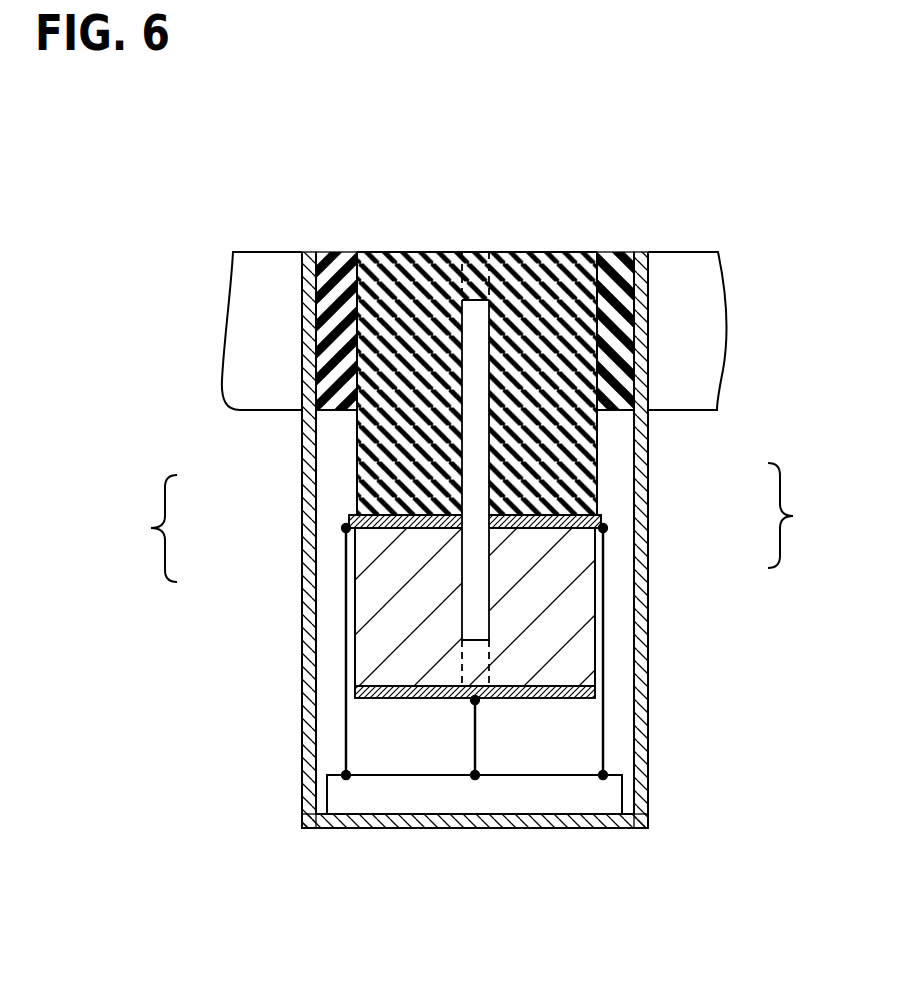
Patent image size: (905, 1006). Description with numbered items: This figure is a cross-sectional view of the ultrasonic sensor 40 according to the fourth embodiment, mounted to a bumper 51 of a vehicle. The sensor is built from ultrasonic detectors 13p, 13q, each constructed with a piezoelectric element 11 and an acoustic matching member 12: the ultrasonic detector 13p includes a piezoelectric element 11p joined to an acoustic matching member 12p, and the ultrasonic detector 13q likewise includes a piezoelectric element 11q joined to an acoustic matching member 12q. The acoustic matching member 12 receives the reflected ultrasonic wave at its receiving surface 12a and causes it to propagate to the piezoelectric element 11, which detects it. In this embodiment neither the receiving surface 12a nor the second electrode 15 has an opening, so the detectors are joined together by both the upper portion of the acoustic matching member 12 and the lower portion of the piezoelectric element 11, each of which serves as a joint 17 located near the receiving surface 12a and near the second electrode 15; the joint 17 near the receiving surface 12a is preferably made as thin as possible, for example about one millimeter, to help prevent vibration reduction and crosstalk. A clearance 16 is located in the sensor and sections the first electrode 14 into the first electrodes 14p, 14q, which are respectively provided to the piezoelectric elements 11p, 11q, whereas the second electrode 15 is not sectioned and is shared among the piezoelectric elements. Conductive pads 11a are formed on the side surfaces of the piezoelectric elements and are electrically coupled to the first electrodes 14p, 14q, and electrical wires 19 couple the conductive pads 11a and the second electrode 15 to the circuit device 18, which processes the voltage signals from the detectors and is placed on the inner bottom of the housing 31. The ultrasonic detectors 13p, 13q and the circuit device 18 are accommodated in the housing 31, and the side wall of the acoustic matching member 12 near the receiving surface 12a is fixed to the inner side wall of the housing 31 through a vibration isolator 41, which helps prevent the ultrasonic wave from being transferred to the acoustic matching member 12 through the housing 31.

The piezoelectric element 11 is at (597, 660).
The conductive pad 11a is at (350, 517).
The piezoelectric element 11p is at (423, 532).
The piezoelectric element 11q is at (583, 541).
The acoustic matching member 12 is at (597, 449).
The receiving surface 12a is at (360, 252).
The acoustic matching member 12p is at (357, 491).
The acoustic matching member 12q is at (583, 470).
The ultrasonic detector 13p is at (133, 528).
The ultrasonic detector 13q is at (811, 515).
The first electrode 14 is at (473, 651).
The first electrode 14p is at (345, 532).
The first electrode 14q is at (603, 560).
The second electrode 15 is at (355, 693).
The clearance 16 is at (488, 420).
The joint 17 is at (467, 663).
The circuit device 18 is at (347, 797).
The electrical wire 19 is at (345, 733).
The housing 31 is at (648, 795).
The ultrasonic sensor 40 is at (698, 227).
The vibration isolator 41 is at (332, 258).
The bumper 51 is at (262, 257).